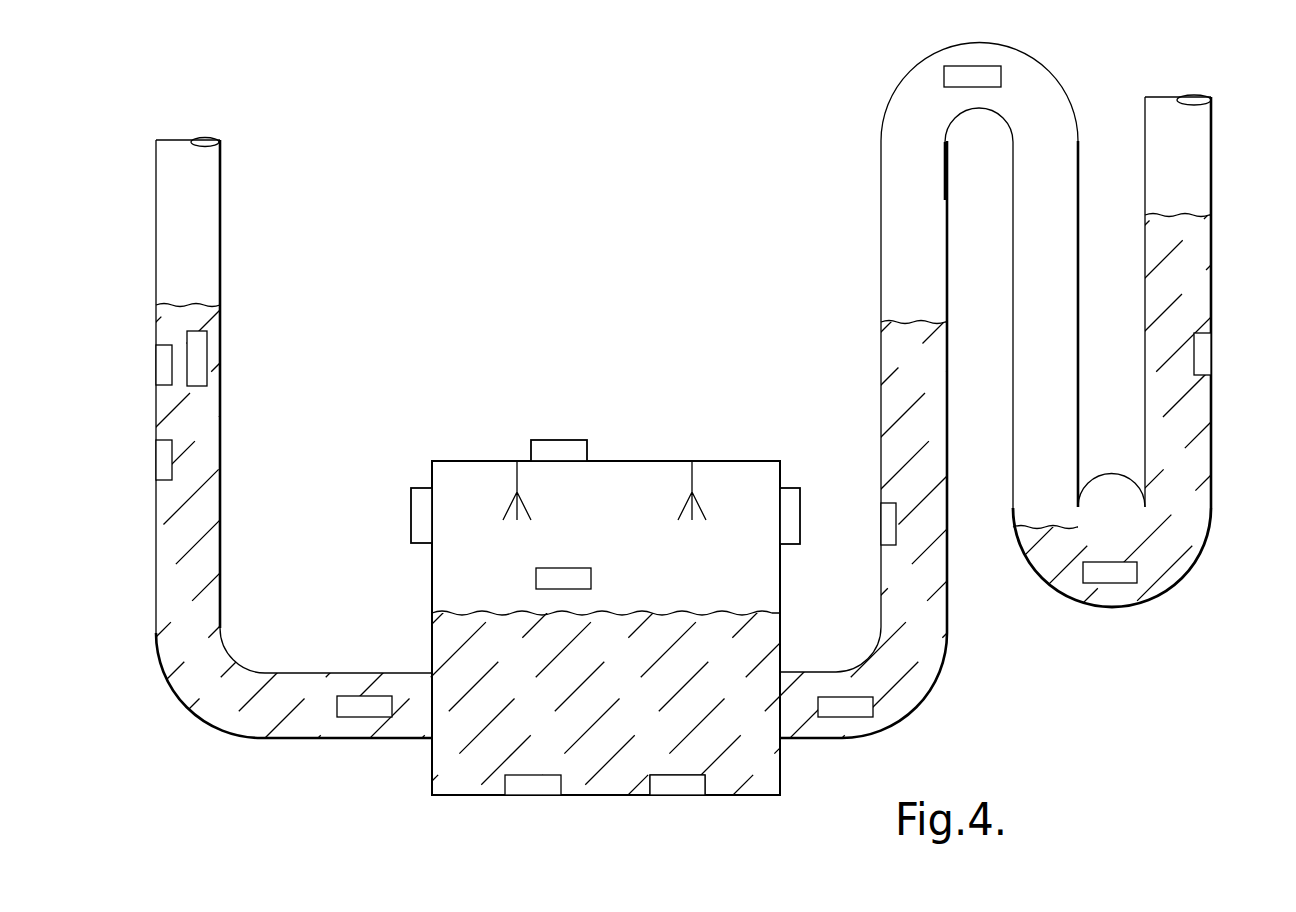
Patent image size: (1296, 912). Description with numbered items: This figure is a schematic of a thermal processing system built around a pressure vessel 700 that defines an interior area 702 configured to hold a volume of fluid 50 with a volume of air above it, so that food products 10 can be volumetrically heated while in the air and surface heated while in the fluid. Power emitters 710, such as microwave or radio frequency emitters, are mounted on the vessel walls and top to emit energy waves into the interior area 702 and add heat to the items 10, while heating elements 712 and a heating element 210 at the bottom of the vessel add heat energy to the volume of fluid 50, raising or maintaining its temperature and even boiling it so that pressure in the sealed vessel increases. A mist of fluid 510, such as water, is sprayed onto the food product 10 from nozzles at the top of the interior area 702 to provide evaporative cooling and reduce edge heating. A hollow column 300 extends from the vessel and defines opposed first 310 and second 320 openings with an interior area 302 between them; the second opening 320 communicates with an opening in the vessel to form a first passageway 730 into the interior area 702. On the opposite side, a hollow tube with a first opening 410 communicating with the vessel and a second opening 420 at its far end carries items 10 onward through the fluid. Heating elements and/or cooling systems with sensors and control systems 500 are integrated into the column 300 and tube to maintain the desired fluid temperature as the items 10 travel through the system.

The food products 10 is at (199, 358).
The volume of fluid 50 is at (614, 738).
The heating element 210 is at (674, 785).
The hollow column 300 is at (219, 317).
The interior area of hollow column 302 is at (201, 236).
The first opening of hollow column 310 is at (222, 142).
The second opening of hollow column 320 is at (431, 670).
The first opening of hollow tube 410 is at (784, 742).
The second opening of hollow tube 420 is at (1192, 95).
The heating elements and/or cooling systems with sensors and control systems 500 is at (160, 360).
The mist of fluid 510 is at (516, 471).
The pressure vessel 700 is at (598, 432).
The interior area of pressure vessel 702 is at (618, 491).
The power emitters 710 is at (420, 487).
The heating element 712 is at (540, 782).
The first passageway 730 is at (442, 702).